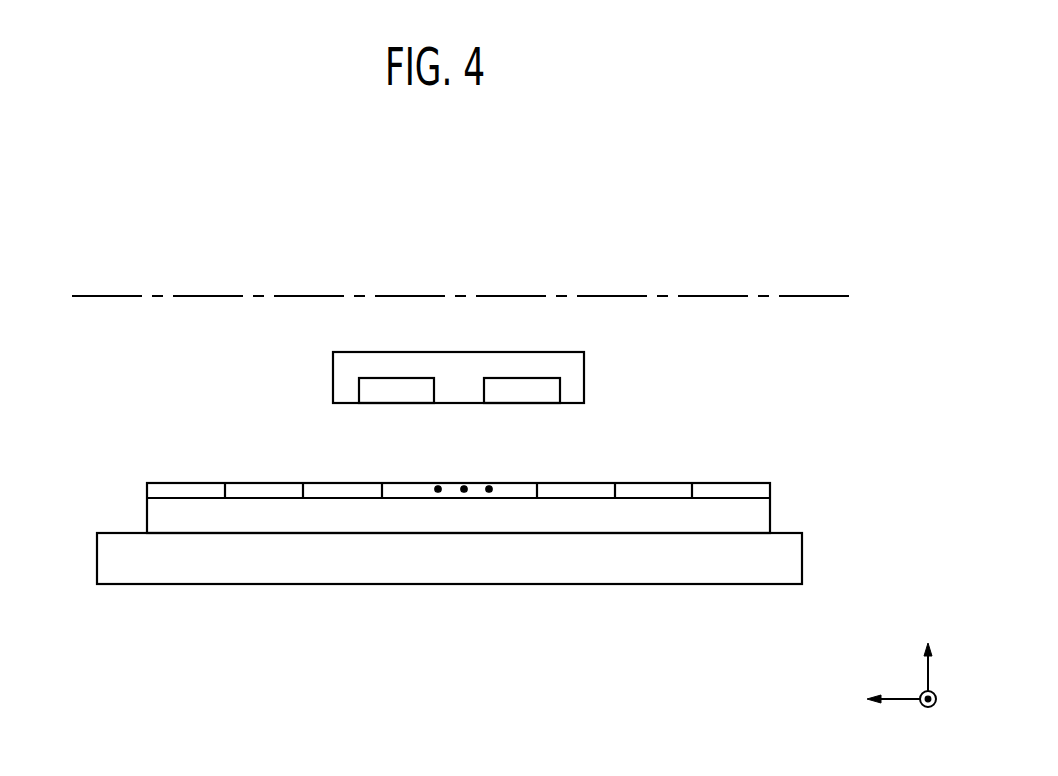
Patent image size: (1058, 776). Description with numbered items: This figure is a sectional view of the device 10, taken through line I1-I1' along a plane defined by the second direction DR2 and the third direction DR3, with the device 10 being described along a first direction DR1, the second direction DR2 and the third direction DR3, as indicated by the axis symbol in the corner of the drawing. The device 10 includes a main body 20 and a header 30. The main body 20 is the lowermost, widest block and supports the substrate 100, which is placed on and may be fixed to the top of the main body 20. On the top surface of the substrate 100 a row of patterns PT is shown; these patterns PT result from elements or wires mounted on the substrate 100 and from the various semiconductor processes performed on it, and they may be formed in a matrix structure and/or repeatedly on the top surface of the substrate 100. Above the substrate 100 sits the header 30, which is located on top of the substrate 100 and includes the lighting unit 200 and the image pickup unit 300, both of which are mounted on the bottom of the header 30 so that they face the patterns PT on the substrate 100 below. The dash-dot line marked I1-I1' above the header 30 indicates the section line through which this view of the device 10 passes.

The device 10 is at (842, 252).
The main body 20 is at (802, 556).
The header 30 is at (584, 371).
The substrate 100 is at (770, 518).
The lighting unit 200 is at (388, 378).
The image pickup unit 300 is at (520, 378).
The patterns PT is at (732, 483).
The line I1-I1' I1 is at (467, 297).
The first direction DR1 is at (931, 715).
The second direction DR2 is at (874, 704).
The third direction DR3 is at (930, 654).